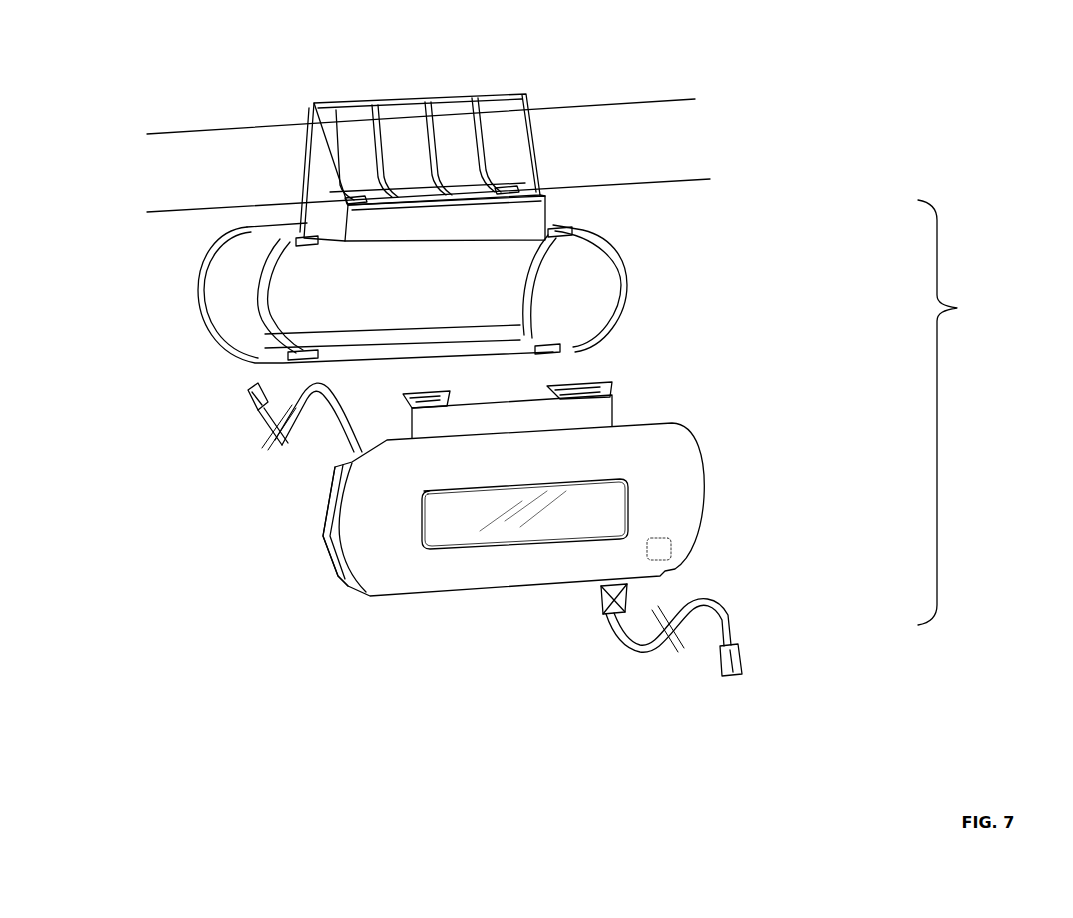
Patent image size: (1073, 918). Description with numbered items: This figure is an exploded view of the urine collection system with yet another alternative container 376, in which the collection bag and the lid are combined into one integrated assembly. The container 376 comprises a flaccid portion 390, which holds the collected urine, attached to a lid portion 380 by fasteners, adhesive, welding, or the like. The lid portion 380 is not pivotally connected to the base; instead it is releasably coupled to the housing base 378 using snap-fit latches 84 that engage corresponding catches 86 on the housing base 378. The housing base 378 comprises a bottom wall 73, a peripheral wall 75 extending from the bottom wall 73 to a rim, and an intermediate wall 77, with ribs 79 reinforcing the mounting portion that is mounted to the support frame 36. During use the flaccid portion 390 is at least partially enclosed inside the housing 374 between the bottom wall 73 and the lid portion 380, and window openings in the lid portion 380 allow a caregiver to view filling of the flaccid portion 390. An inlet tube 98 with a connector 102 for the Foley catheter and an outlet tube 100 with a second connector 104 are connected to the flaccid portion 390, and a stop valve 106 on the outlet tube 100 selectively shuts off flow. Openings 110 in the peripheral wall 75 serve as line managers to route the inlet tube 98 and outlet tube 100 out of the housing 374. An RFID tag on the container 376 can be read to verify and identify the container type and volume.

The support frame 36 is at (614, 102).
The bottom wall 73 is at (293, 278).
The peripheral wall 75 is at (210, 291).
The intermediate wall 77 is at (453, 216).
The ribs 79 is at (497, 107).
The snap-fit latches 84 is at (440, 404).
The catches 86 is at (352, 196).
The inlet tube 98 is at (346, 409).
The outlet tube 100 is at (714, 611).
The connector 102 is at (246, 385).
The second connector 104 is at (736, 656).
The stop valve 106 is at (602, 599).
The openings 110 is at (305, 237).
The housing 374 is at (966, 412).
The container 376 is at (798, 433).
The housing base 378 is at (750, 188).
The lid portion 380 is at (705, 500).
The flaccid portion 390 is at (327, 503).
The radio frequency identification tag RFID is at (672, 547).